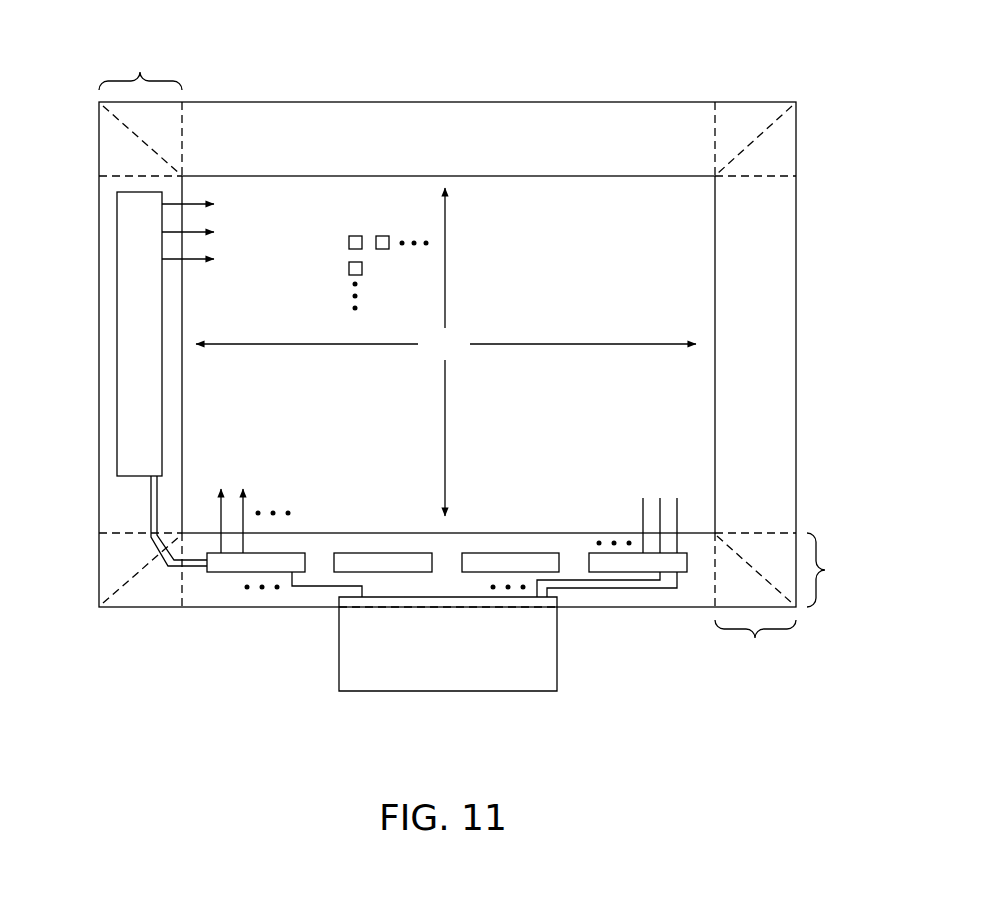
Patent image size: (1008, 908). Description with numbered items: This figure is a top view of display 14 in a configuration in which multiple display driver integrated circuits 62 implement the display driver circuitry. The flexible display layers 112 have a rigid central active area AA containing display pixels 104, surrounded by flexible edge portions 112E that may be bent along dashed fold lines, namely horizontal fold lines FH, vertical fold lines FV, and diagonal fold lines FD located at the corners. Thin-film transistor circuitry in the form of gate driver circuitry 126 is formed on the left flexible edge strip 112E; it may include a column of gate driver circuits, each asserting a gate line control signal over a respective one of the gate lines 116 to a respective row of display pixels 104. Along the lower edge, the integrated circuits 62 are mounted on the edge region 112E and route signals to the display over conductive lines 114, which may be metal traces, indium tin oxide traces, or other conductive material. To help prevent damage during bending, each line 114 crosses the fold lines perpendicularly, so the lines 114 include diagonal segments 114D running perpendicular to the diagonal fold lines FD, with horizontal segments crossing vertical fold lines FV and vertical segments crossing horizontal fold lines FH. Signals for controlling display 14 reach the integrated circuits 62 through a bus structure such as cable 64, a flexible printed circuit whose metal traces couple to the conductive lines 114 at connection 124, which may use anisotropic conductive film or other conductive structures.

The display 14 is at (683, 28).
The flexible display layers 112 is at (796, 418).
The flexible edge portions 112E is at (490, 357).
The vertical fold lines FV is at (718, 130).
The horizontal fold lines FH is at (780, 178).
The diagonal fold lines FD is at (777, 118).
The gate driver circuitry 126 is at (117, 378).
The gate lines 116 is at (210, 255).
The display pixels 104 is at (351, 236).
The active area AA is at (446, 352).
The display driver integrated circuits 62 is at (408, 552).
The diagonal segments 114D is at (158, 566).
The conductive lines 114 is at (307, 594).
The connection 124 is at (570, 596).
The cable 64 is at (347, 669).